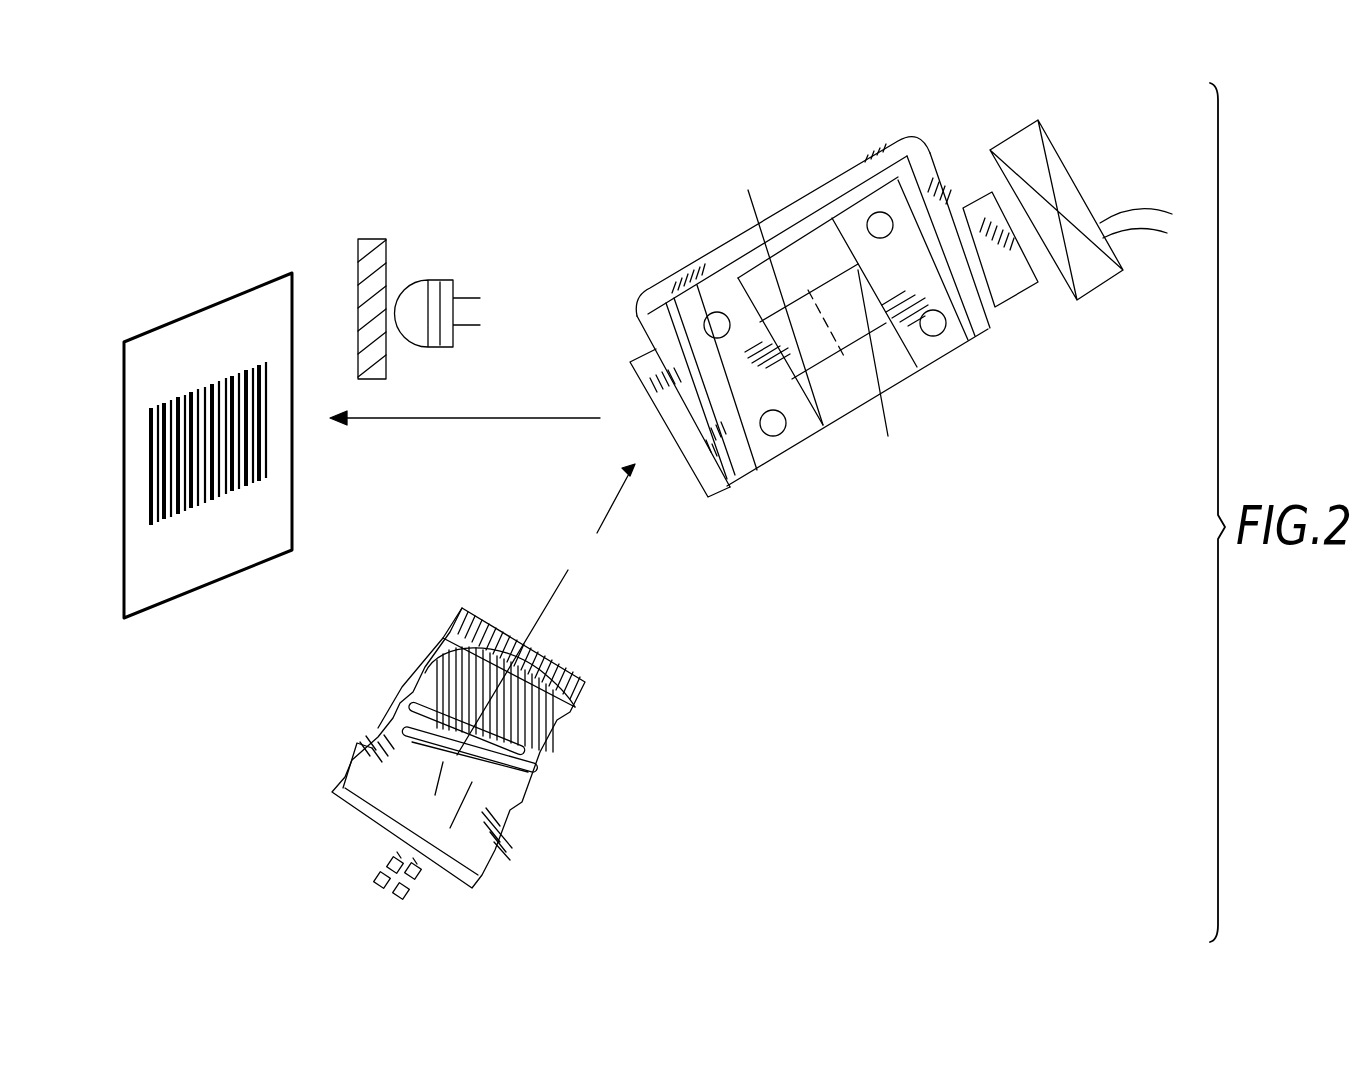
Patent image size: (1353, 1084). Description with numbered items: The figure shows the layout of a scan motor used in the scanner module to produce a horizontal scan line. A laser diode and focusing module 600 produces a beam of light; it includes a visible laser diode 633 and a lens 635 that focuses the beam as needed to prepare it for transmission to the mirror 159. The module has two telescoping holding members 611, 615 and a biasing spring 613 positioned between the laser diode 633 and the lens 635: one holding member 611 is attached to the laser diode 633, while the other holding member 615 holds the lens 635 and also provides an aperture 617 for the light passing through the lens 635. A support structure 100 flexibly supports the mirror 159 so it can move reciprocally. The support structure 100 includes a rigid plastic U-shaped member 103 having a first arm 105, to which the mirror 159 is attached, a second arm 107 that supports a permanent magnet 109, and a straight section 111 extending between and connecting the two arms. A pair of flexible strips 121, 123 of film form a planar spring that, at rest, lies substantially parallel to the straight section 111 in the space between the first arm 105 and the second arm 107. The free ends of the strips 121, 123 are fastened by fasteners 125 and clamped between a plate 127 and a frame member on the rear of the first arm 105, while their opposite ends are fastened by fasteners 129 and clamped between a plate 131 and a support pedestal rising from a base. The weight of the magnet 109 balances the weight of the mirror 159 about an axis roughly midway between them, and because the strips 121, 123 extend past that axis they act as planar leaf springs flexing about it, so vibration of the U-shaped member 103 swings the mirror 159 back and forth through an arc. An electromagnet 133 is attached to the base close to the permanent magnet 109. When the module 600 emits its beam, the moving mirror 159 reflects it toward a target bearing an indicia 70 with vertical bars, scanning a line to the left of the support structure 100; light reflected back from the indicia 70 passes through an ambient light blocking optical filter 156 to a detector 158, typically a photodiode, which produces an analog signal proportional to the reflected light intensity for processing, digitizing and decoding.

The indicia 70 is at (267, 438).
The support structure 100 is at (755, 176).
The U-shaped member 103 is at (922, 97).
The first arm 105 is at (750, 487).
The second arm 107 is at (997, 300).
The permanent magnet 109 is at (1030, 282).
The straight section 111 is at (714, 249).
The flexible strip 121 is at (793, 312).
The flexible strip 123 is at (905, 378).
The fasteners 125 is at (786, 423).
The plate 127 is at (763, 443).
The fasteners 129 is at (947, 323).
The plate 131 is at (922, 343).
The electromagnet 133 is at (1078, 177).
The ambient light blocking optical filter 156 is at (376, 238).
The detector 158 is at (440, 277).
The mirror 159 is at (634, 372).
The laser diode and focusing module 600 is at (340, 742).
The holding member 611 is at (382, 718).
The biasing spring 613 is at (387, 703).
The holding member 615 is at (437, 640).
The aperture 617 is at (528, 636).
The visible laser diode 633 is at (515, 810).
The lens 635 is at (565, 697).